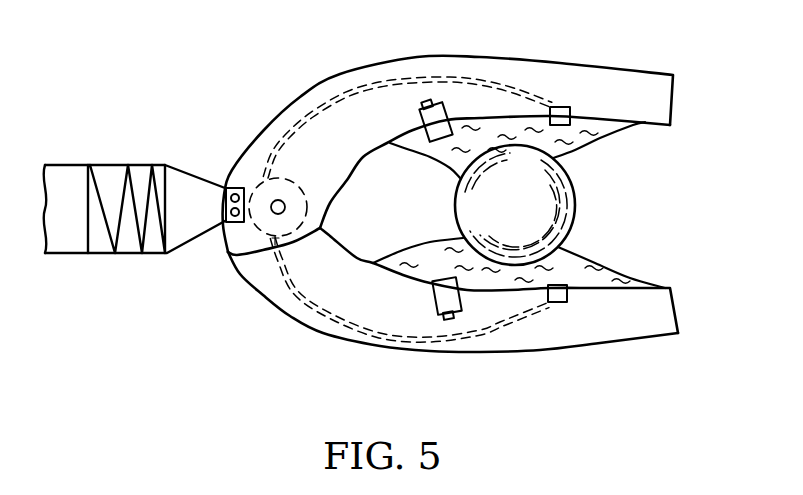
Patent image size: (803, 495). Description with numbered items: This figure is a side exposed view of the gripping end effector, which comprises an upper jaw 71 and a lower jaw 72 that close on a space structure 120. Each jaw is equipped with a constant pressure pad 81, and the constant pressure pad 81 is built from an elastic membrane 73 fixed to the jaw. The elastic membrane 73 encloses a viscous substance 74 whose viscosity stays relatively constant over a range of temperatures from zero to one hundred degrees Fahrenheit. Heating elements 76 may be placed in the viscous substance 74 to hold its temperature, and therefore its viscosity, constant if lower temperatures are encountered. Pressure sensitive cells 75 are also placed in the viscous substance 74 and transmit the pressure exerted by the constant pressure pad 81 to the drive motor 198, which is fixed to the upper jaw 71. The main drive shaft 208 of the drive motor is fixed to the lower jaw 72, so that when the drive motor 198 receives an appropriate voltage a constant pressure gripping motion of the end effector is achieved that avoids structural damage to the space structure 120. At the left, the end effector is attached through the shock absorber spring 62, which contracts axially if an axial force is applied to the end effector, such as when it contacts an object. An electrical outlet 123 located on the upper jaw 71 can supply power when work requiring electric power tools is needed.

The shock absorber spring 62 is at (123, 165).
The upper jaw 71 is at (577, 60).
The lower jaw 72 is at (542, 350).
The elastic membrane 73 is at (615, 278).
The viscous substance 74 is at (427, 262).
The pressure sensitive cells 75 is at (571, 109).
The heating elements 76 is at (418, 120).
The constant pressure pad 81 is at (607, 137).
The space structure 120 is at (575, 200).
The electrical outlet 123 is at (232, 223).
The drive motor 198 is at (300, 197).
The main drive shaft 208 is at (272, 210).